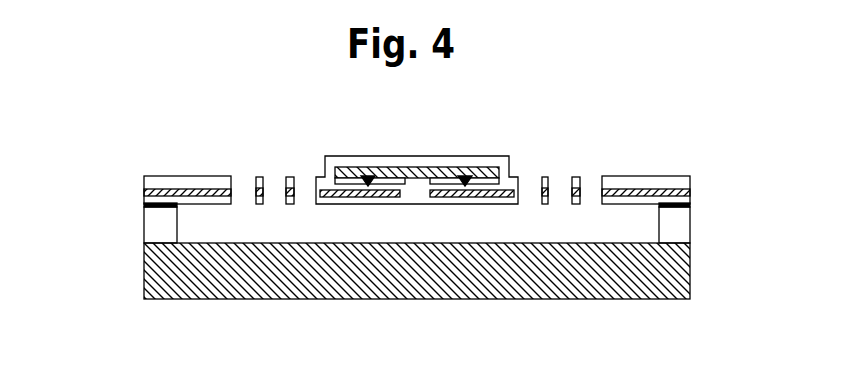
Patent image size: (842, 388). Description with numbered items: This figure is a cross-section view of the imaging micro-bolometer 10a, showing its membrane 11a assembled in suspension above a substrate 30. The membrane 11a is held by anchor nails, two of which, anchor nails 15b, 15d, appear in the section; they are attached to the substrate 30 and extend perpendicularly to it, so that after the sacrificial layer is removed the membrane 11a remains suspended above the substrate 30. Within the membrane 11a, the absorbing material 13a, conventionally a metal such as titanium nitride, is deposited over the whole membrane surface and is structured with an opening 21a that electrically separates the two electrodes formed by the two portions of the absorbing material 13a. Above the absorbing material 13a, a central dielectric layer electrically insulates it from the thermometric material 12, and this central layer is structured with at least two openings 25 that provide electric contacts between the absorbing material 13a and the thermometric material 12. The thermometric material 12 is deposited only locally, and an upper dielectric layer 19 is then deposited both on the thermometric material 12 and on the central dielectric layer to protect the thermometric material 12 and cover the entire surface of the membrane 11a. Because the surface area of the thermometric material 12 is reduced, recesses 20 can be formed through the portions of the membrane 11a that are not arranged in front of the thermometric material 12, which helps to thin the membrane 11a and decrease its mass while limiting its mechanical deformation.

The imaging micro-bolometer 10a is at (53, 153).
The membrane 11a is at (514, 145).
The thermometric material 12 is at (445, 183).
The absorbing material 13a is at (622, 190).
The anchor nail 15b is at (158, 221).
The anchor nail 15d is at (673, 226).
The upper dielectric layer 19 is at (331, 165).
The recesses 20 is at (276, 187).
The opening 21a is at (417, 195).
The openings 25 is at (367, 182).
The substrate 30 is at (342, 270).